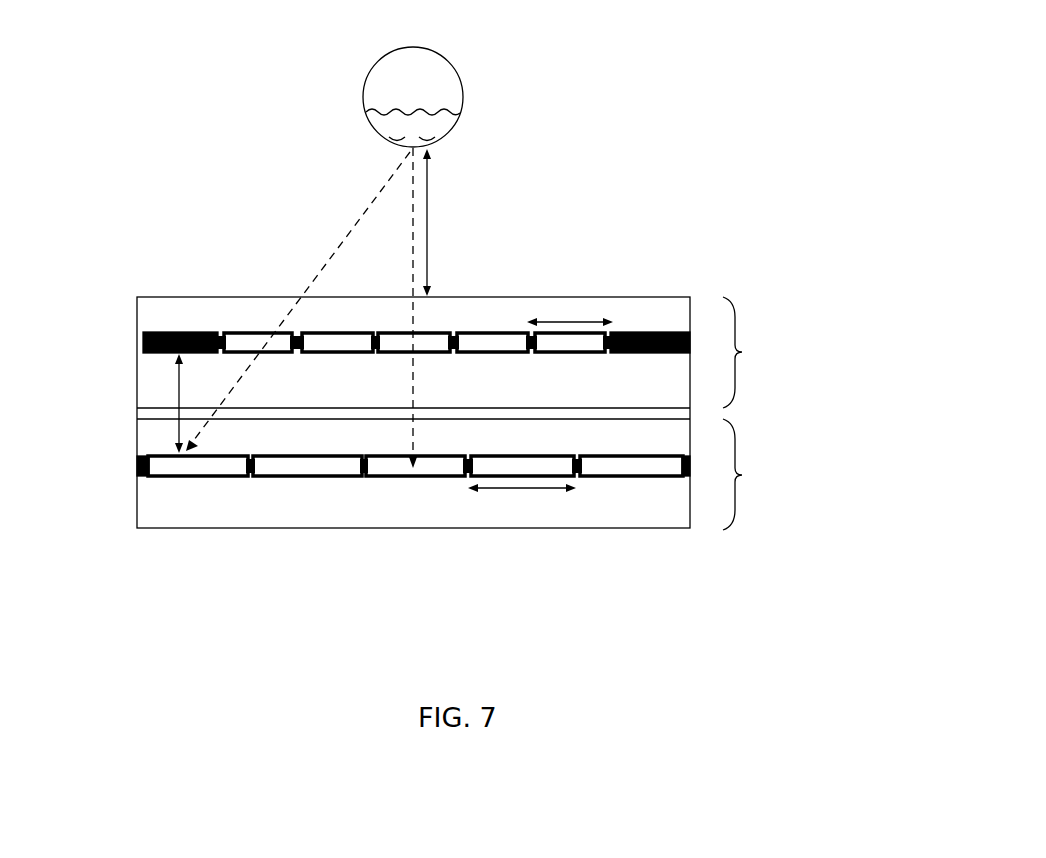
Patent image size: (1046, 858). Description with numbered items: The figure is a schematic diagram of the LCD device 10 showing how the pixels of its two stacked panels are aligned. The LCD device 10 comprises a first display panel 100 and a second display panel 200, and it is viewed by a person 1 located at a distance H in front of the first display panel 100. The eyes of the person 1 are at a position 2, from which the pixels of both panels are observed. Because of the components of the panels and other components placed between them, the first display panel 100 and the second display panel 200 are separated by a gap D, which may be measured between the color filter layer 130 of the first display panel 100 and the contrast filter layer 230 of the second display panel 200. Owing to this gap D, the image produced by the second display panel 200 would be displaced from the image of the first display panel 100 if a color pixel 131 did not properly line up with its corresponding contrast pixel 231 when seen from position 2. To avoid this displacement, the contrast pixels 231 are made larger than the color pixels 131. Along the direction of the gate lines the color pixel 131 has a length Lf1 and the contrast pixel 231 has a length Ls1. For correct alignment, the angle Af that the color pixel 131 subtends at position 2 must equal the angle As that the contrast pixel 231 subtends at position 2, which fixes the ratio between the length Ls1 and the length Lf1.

The person 1 is at (437, 50).
The position 2 is at (410, 152).
The LCD device 10 is at (812, 133).
The first display panel 100 is at (754, 352).
The color filter layer 130 is at (141, 343).
The color pixel 131 is at (645, 333).
The second display panel 200 is at (754, 474).
The contrast filter layer 230 is at (140, 462).
The contrast pixel 231 is at (637, 465).
The distance H is at (432, 215).
The gap D is at (178, 387).
The length of color pixel Lf1 is at (570, 328).
The length of contrast pixel Ls1 is at (522, 490).
The angle of color pixel Af is at (297, 326).
The angle of contrast pixel As is at (207, 422).